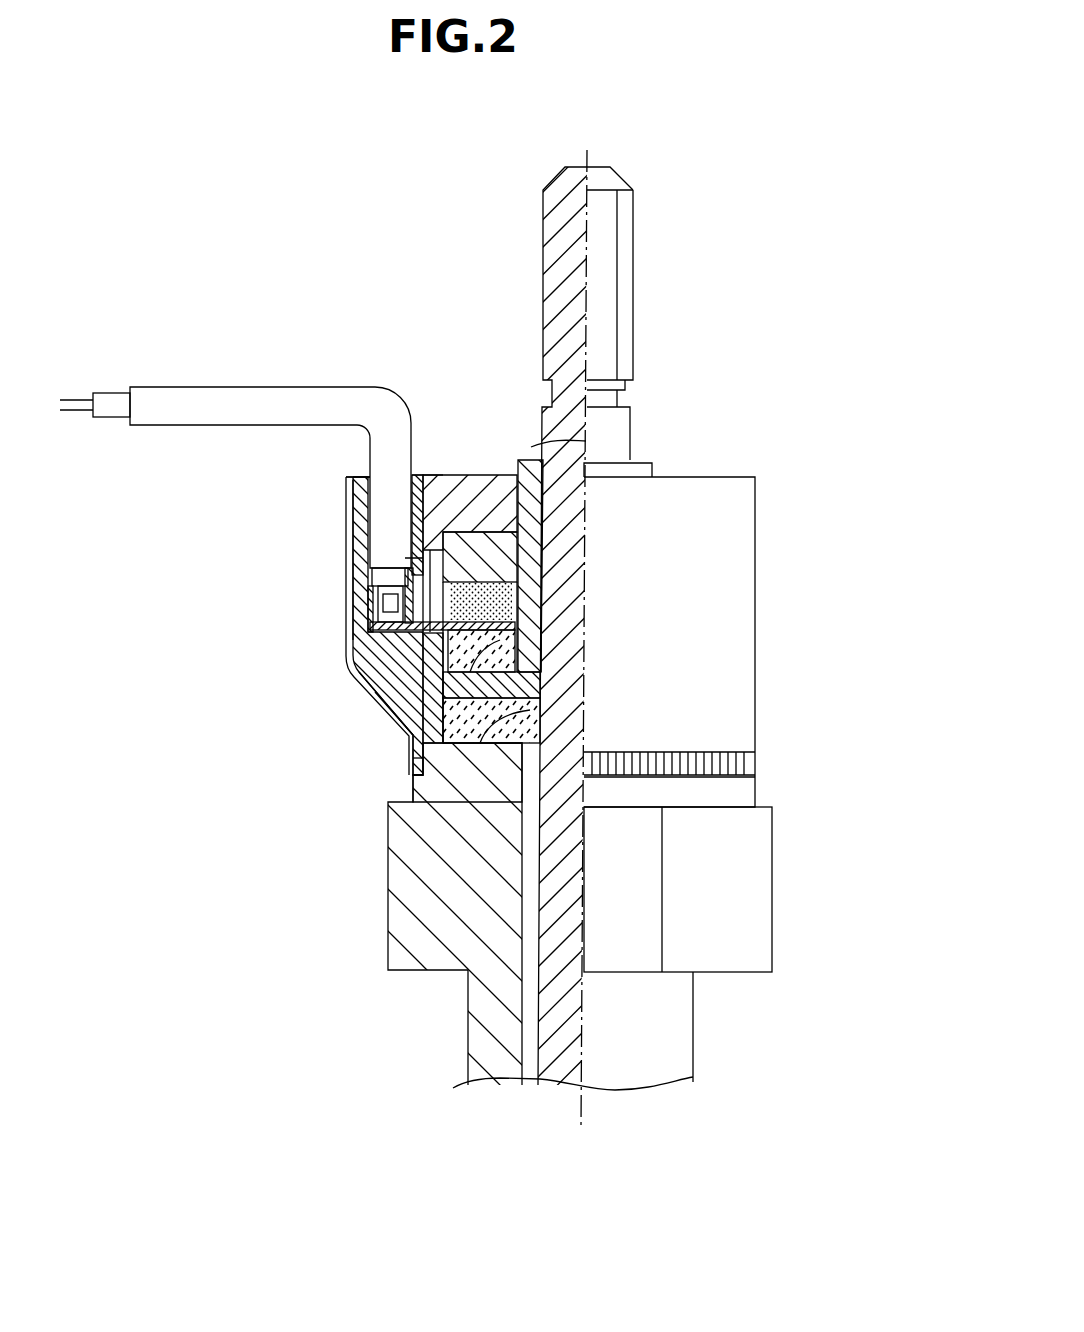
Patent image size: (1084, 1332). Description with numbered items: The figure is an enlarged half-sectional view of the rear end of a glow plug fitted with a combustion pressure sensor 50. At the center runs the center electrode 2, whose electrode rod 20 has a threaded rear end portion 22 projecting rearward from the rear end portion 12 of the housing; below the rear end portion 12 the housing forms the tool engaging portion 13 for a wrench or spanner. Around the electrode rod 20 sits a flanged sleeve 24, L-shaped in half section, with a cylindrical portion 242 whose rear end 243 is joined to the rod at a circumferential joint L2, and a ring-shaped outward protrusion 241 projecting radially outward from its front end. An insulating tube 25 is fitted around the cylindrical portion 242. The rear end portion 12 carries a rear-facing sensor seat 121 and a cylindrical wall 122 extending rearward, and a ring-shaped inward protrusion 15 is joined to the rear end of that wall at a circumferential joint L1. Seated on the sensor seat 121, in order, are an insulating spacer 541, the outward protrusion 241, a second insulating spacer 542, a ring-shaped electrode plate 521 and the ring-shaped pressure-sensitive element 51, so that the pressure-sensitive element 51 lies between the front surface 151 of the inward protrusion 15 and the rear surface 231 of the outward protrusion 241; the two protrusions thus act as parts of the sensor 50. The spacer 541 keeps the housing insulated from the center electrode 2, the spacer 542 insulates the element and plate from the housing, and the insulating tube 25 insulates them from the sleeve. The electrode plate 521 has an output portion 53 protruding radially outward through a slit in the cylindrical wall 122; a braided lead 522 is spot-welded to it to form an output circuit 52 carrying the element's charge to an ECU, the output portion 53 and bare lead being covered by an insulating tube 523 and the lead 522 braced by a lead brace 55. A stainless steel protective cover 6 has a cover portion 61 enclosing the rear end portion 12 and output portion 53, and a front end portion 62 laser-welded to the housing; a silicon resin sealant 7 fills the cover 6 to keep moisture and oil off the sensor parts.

The center electrode 2 is at (565, 624).
The electrode rod 20 is at (550, 1065).
The rear end portion 22 is at (603, 226).
The flanged sleeve 24 is at (652, 463).
The cylindrical portion 242 is at (583, 550).
The rear end 243 is at (525, 458).
The rear surface 231 is at (583, 653).
The outward protrusion 241 is at (583, 692).
The protective cover 6 is at (732, 643).
The cover portion 61 is at (347, 595).
The front end portion 62 is at (745, 760).
The sealant 7 is at (480, 475).
The rear end portion 12 is at (440, 760).
The sensor seat 121 is at (640, 775).
The cylindrical wall 122 is at (465, 718).
The tool engaging portion 13 is at (420, 945).
The inward protrusion 15 is at (443, 535).
The front surface 151 is at (583, 595).
The insulating tube 25 is at (443, 548).
The combustion pressure sensor 50 is at (448, 547).
The pressure-sensitive element 51 is at (398, 608).
The output circuit 52 is at (271, 632).
The electrode plate 521 is at (413, 677).
The lead 522 is at (272, 393).
The insulating tube 523 is at (368, 583).
The output portion 53 is at (415, 656).
The insulating spacer 541 is at (413, 737).
The insulating spacer 542 is at (433, 690).
The lead brace 55 is at (347, 478).
The circumferential joint L1 is at (438, 475).
The circumferential joint L2 is at (632, 452).